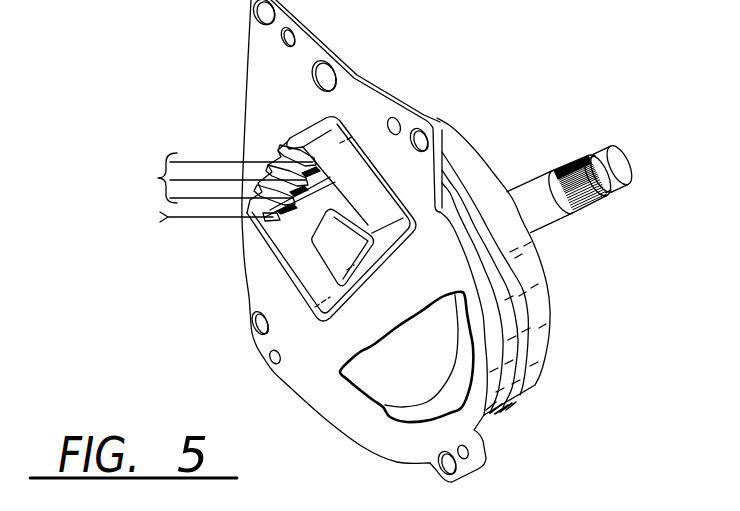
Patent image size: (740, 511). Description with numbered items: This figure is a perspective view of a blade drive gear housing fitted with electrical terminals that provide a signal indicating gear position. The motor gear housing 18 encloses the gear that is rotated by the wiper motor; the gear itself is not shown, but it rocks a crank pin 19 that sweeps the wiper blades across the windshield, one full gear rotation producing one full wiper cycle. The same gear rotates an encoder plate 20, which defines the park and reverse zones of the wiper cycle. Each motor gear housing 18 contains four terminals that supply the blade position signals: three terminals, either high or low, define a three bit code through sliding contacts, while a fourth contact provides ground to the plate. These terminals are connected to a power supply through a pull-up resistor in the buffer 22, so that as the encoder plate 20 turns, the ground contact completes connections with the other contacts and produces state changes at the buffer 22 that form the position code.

The motor gear housing 18 is at (533, 385).
The crank pin 19 is at (618, 180).
The encoder plate 20 is at (430, 372).
The buffer 22 is at (158, 158).